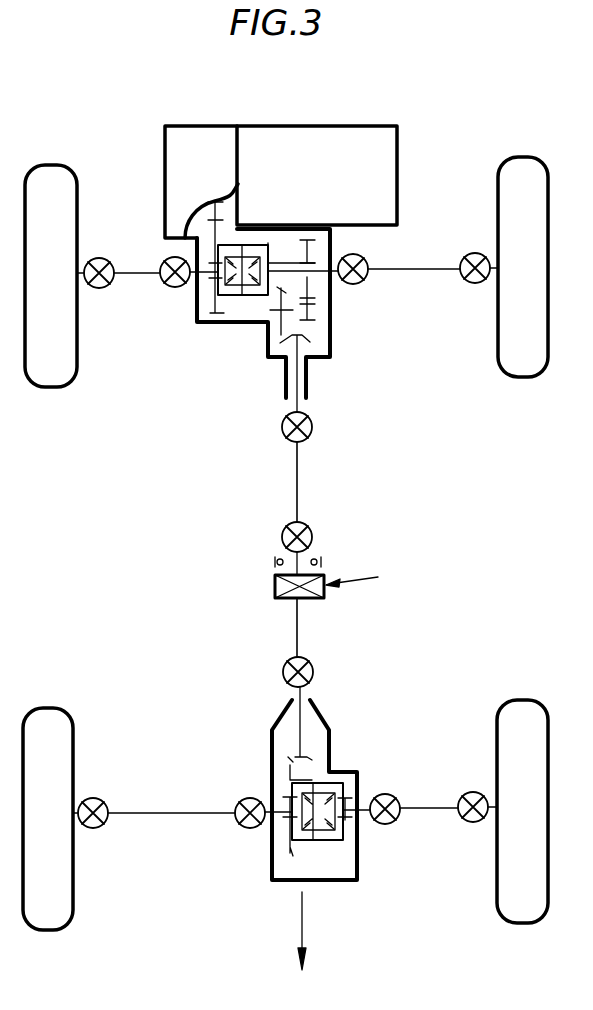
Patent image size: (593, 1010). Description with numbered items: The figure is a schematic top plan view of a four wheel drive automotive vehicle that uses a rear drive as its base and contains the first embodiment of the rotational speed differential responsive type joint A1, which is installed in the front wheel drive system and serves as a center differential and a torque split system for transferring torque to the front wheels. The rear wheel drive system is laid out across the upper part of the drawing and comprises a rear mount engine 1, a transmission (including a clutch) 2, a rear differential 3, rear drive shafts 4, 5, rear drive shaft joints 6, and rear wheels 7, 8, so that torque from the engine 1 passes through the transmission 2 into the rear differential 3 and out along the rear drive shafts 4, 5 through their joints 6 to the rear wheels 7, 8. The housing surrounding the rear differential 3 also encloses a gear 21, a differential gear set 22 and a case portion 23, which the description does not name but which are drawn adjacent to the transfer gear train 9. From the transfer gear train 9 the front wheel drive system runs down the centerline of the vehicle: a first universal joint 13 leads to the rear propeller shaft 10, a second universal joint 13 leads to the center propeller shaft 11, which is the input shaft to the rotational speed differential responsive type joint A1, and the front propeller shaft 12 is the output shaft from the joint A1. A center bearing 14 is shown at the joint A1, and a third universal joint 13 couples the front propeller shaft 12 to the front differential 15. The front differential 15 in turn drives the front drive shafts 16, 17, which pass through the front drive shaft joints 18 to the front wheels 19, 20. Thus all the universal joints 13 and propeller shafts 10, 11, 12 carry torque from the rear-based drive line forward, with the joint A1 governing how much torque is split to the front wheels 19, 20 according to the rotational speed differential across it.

The rear mount engine 1 is at (372, 124).
The transmission 2 is at (193, 126).
The rear differential 3 is at (232, 313).
The rear drive shaft 4 is at (138, 274).
The rear drive shaft 5 is at (440, 269).
The rear drive shaft joints 6 is at (168, 260).
The rear wheel 7 is at (50, 165).
The rear wheel 8 is at (522, 157).
The transfer gear train 9 is at (318, 340).
The rear propeller shaft 10 is at (300, 478).
The center propeller shaft 11 is at (302, 561).
The front propeller shaft 12 is at (300, 627).
The universal joint 13 is at (282, 425).
The center bearing 14 is at (273, 562).
The front differential 15 is at (312, 777).
The front drive shaft 16 is at (173, 815).
The front drive shaft 17 is at (432, 812).
The front drive shaft joints 18 is at (237, 803).
The front wheel 19 is at (48, 708).
The front wheel 20 is at (520, 700).
The transfer gear 21 is at (202, 207).
The front differential 22 is at (262, 295).
The transfer case 23 is at (332, 325).
The rotational speed differential responsive type joint A1 is at (366, 575).